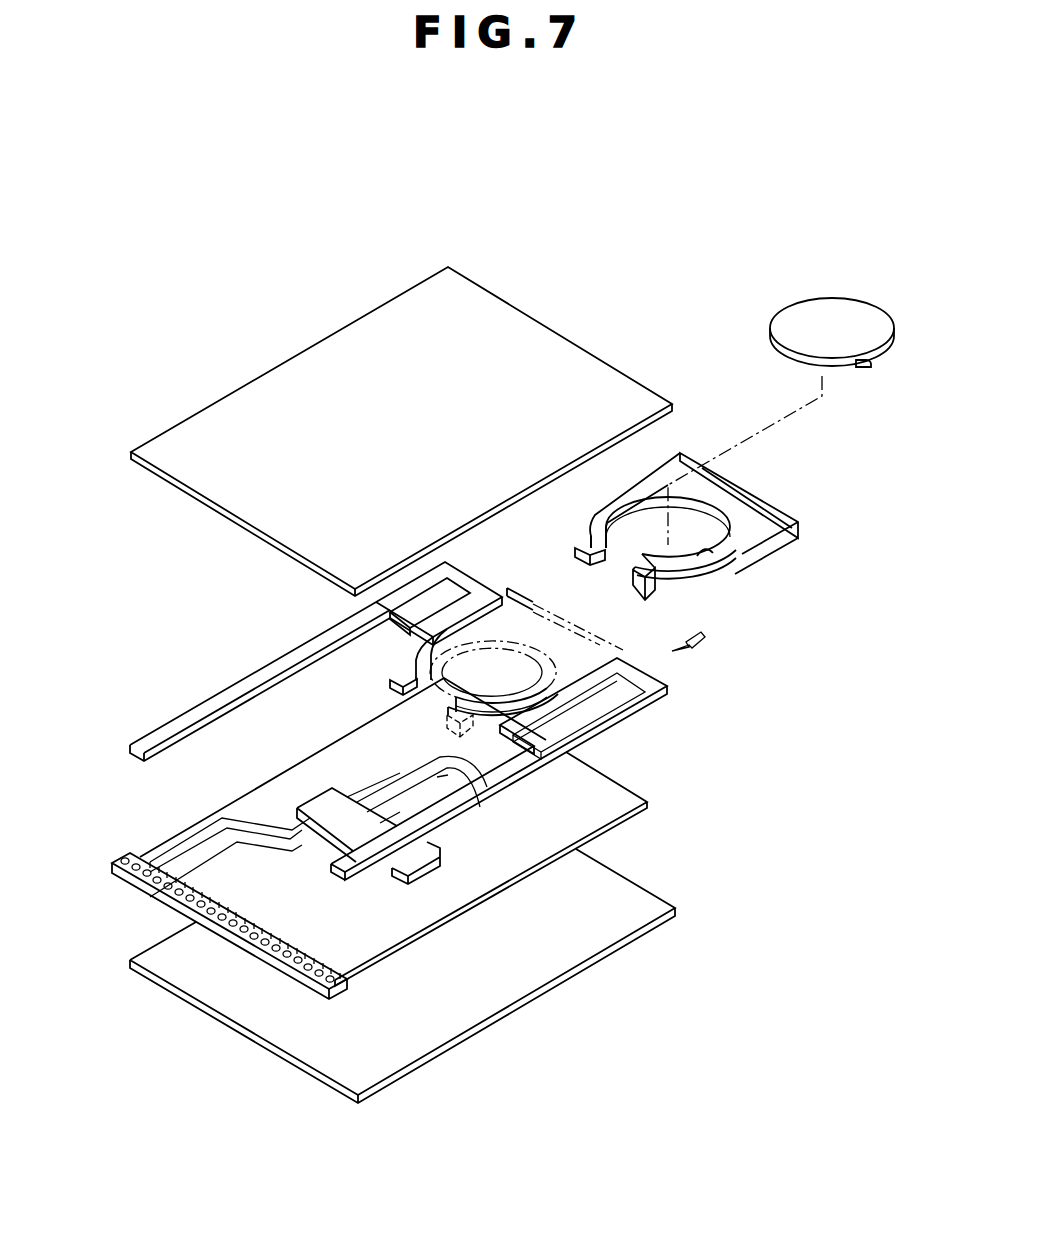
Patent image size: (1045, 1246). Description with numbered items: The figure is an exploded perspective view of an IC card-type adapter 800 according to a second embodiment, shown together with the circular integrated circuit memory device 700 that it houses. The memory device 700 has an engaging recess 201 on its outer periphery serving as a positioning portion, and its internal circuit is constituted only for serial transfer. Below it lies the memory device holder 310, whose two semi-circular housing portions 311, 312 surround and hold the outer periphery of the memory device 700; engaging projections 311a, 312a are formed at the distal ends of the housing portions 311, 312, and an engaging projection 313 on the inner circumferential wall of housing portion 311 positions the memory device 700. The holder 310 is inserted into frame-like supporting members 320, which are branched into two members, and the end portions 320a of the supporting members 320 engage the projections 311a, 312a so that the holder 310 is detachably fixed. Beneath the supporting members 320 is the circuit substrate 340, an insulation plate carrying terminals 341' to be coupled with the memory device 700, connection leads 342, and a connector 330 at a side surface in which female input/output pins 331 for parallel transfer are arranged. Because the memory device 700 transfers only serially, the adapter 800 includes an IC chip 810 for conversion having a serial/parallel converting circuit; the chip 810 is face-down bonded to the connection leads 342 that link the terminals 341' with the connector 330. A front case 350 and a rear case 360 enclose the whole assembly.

The integrated circuit memory device 700 is at (860, 278).
The engaging recess 201 is at (863, 370).
The IC card-type adapter 800 is at (598, 315).
The front case 350 is at (612, 395).
The memory device holder 310 is at (764, 540).
The housing portion 311 is at (708, 585).
The engaging projection 311a is at (652, 604).
The housing portion 312 is at (592, 524).
The engaging projection 312a is at (586, 558).
The engaging projection 313 is at (736, 570).
The supporting member 320 is at (247, 676).
The end portion 320a is at (382, 676).
The circuit substrate 340 is at (652, 806).
The terminal 341' is at (448, 811).
The connection lead 342 is at (202, 842).
The IC chip for conversion 810 is at (306, 795).
The connector 330 is at (174, 884).
The input/output pins 331 is at (247, 958).
The rear case 360 is at (627, 923).